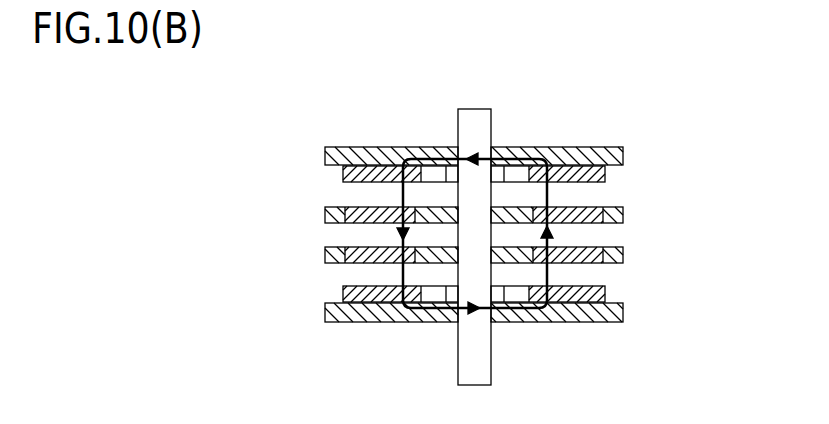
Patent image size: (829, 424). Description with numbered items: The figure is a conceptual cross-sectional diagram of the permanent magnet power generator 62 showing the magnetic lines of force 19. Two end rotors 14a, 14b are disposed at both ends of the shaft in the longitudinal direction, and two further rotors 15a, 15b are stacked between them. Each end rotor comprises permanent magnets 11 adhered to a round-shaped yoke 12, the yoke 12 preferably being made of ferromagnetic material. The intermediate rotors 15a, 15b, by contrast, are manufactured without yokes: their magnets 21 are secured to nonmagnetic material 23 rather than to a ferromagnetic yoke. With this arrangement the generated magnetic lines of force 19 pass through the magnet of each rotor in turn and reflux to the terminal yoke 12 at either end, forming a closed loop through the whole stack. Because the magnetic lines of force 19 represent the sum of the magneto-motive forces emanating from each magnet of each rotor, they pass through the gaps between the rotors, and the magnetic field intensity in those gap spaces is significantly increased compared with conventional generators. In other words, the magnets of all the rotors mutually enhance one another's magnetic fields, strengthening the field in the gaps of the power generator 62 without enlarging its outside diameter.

The power generator 62 is at (322, 113).
The yoke 12 is at (550, 153).
The permanent magnets 11 is at (585, 170).
The end rotor 14a is at (334, 296).
The end rotor 14b is at (335, 170).
The rotor 15a is at (324, 255).
The rotor 15b is at (324, 215).
The magnets 21 is at (593, 207).
The nonmagnetic material 23 is at (620, 207).
The magnetic lines of force 19 is at (523, 322).